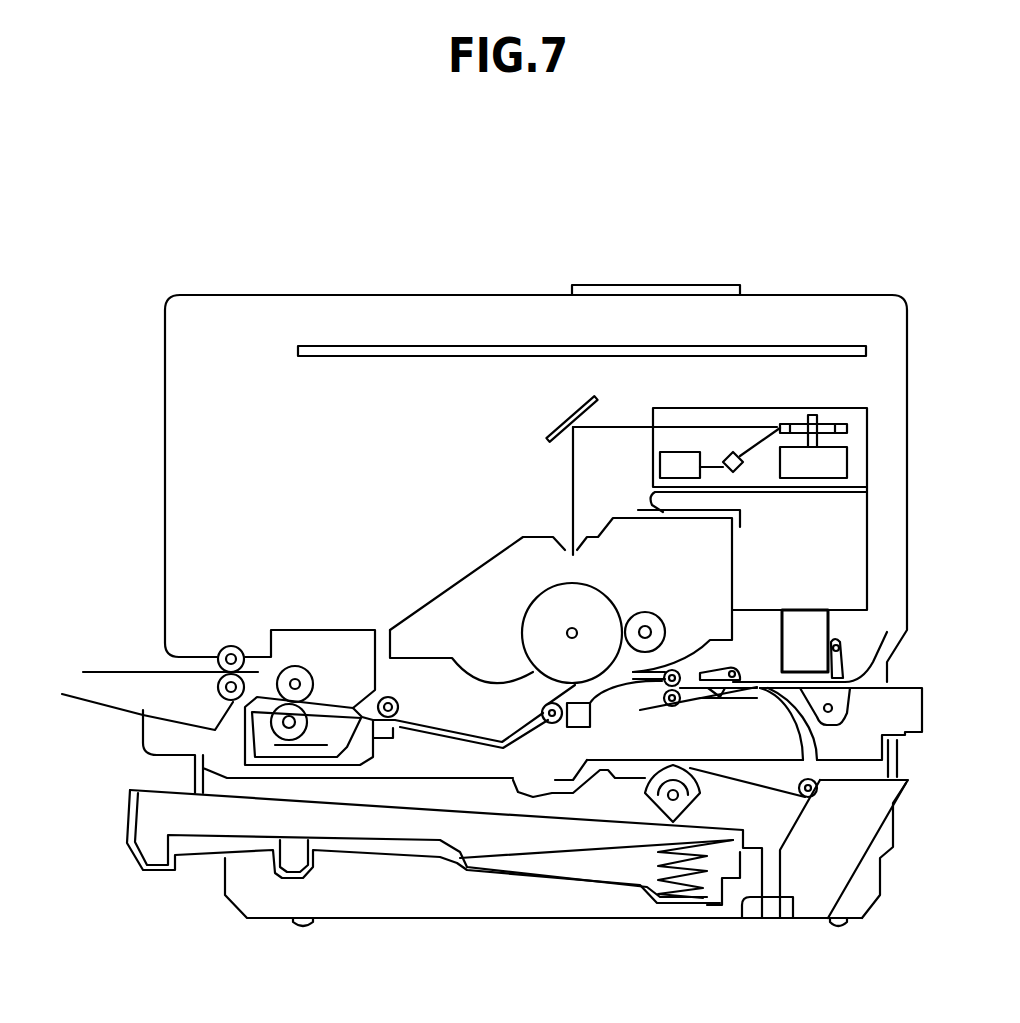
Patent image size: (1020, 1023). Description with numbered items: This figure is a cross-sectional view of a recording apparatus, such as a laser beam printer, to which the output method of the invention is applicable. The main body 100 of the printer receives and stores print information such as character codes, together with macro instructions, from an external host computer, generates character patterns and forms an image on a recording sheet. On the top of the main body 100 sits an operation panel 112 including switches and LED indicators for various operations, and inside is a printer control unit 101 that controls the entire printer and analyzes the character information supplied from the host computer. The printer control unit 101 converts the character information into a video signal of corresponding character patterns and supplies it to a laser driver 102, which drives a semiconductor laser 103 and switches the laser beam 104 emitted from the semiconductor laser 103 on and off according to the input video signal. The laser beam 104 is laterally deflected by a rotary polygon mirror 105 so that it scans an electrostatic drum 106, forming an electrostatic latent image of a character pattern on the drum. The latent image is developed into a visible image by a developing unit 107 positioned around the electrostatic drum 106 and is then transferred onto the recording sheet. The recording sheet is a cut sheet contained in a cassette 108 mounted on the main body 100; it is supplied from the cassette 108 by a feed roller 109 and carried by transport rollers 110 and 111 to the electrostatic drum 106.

The main body 100 is at (792, 295).
The printer control unit 101 is at (838, 346).
The laser driver 102 is at (668, 453).
The semiconductor laser 103 is at (727, 460).
The laser beam 104 is at (748, 427).
The rotary polygon mirror 105 is at (850, 427).
The electrostatic drum 106 is at (532, 602).
The developing unit 107 is at (430, 615).
The cassette 108 is at (127, 825).
The feed roller 109 is at (668, 803).
The transport roller 110 is at (805, 797).
The transport roller 111 is at (668, 702).
The operation panel 112 is at (632, 285).